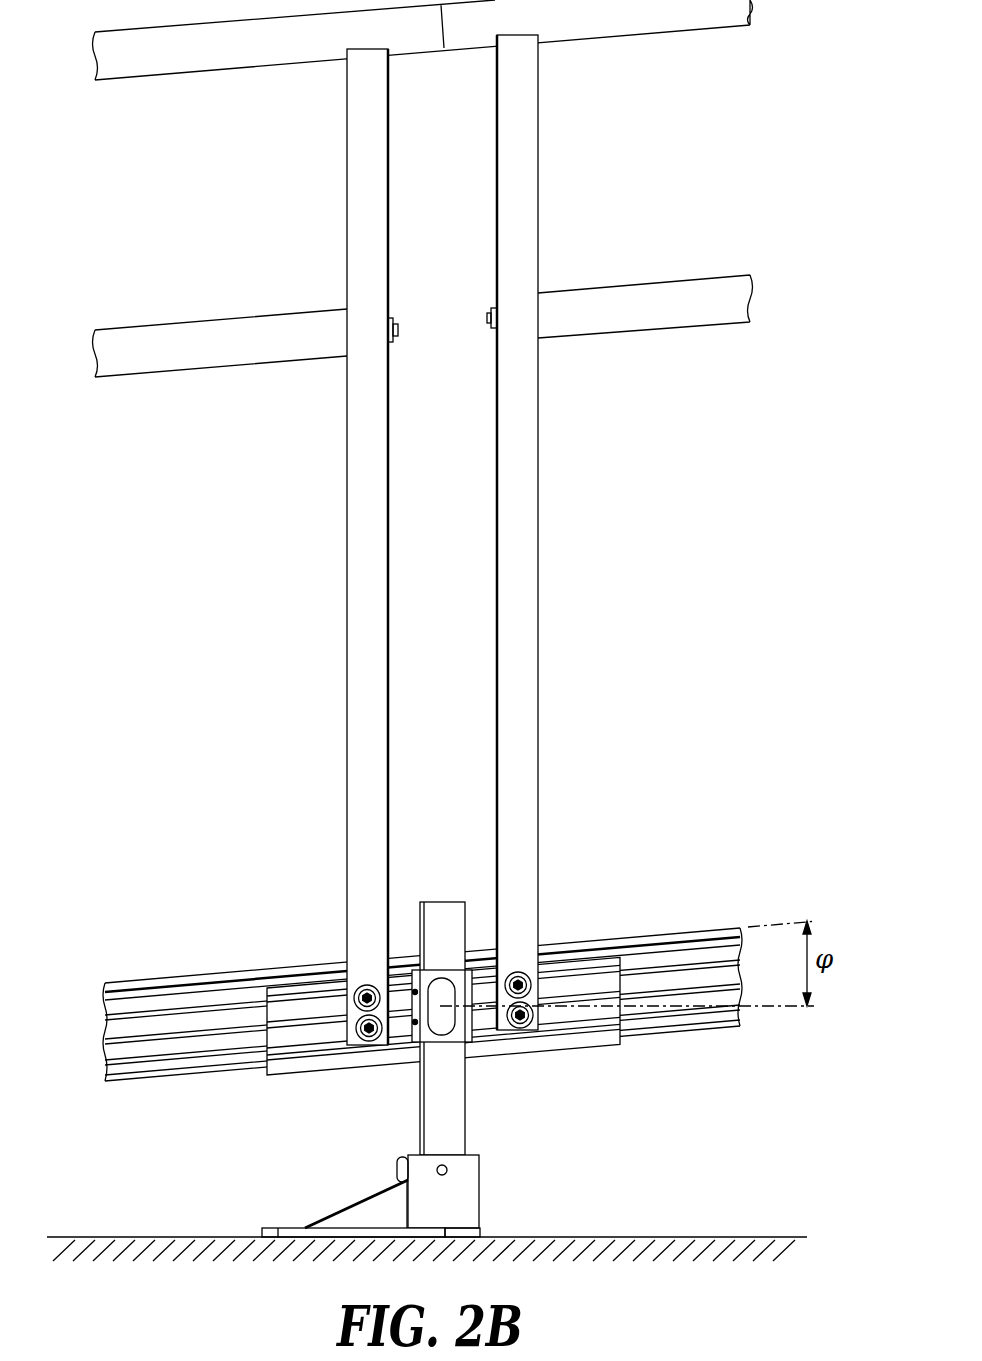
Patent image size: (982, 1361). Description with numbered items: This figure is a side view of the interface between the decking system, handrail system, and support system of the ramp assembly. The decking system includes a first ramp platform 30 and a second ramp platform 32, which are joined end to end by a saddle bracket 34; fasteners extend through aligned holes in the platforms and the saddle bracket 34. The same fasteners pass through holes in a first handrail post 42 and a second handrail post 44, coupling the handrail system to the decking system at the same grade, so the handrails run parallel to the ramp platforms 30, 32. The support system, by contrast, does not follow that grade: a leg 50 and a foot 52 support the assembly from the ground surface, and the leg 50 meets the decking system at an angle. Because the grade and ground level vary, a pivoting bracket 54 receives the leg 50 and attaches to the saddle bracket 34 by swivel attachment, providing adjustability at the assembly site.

The first ramp platform 30 is at (173, 977).
The second ramp platform 32 is at (657, 948).
The saddle bracket 34 is at (590, 1043).
The first handrail post 42 is at (347, 763).
The second handrail post 44 is at (538, 762).
The leg 50 is at (425, 1107).
The foot 52 is at (350, 1207).
The pivoting bracket 54 is at (468, 1033).